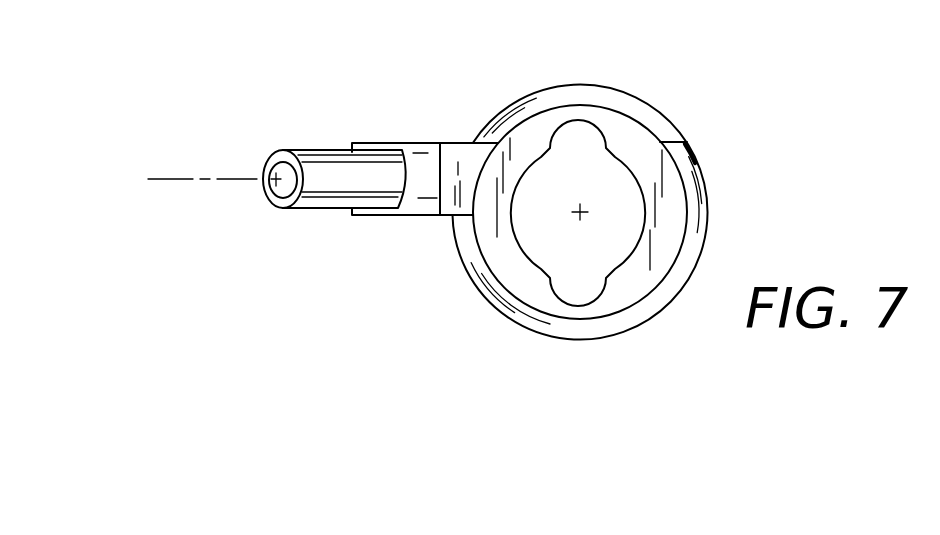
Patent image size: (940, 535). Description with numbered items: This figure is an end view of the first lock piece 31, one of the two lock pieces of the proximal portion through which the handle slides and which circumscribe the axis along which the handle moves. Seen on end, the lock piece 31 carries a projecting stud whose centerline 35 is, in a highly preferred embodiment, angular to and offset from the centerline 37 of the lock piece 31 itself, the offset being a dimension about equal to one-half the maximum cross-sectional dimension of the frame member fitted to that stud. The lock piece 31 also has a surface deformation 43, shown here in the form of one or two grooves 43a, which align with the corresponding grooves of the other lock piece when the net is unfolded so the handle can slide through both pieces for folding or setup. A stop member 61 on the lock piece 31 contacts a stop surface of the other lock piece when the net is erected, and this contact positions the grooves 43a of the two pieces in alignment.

The first lock piece 31 is at (465, 243).
The centerline of a stud 35 is at (172, 179).
The centerline of a lock piece 37 is at (580, 213).
The surface deformation 43 is at (557, 120).
The groove 43a is at (585, 140).
The stop member 61 is at (687, 157).